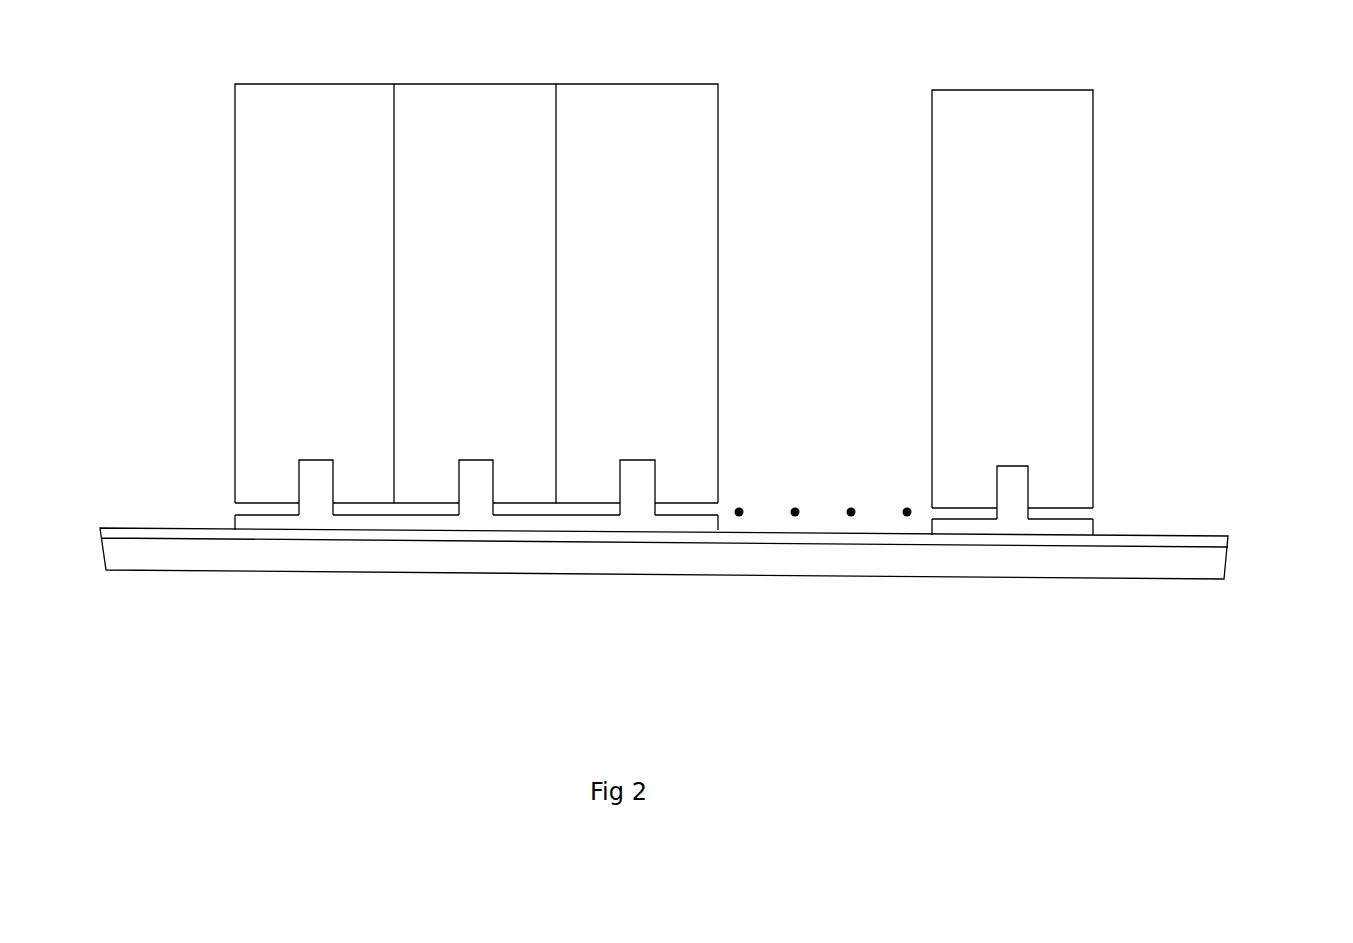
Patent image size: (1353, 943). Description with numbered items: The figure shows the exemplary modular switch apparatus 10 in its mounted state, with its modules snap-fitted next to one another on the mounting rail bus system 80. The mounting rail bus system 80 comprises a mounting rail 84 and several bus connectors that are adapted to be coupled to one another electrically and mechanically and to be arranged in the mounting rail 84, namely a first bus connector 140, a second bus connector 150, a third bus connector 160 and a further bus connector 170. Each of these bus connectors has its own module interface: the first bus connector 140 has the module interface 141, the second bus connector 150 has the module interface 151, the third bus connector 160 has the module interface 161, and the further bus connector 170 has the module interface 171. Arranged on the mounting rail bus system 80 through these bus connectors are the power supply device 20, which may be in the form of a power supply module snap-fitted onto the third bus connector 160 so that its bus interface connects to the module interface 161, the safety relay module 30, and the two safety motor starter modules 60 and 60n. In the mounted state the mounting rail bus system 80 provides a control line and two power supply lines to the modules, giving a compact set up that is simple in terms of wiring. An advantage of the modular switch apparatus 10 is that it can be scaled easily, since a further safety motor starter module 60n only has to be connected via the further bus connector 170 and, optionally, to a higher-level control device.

The modular switch apparatus 10 is at (131, 139).
The power supply device 20 is at (292, 82).
The safety relay module 30 is at (478, 82).
The safety motor starter module 60 is at (635, 83).
The further safety motor starter module 60n is at (1010, 87).
The mounting rail bus system 80 is at (218, 511).
The mounting rail 84 is at (1228, 553).
The first bus connector 140 is at (413, 522).
The module interface 141 is at (477, 482).
The second bus connector 150 is at (570, 523).
The module interface 151 is at (637, 482).
The third bus connector 160 is at (247, 523).
The module interface 161 is at (316, 481).
The further bus connector 170 is at (945, 525).
The module interface 171 is at (1012, 488).